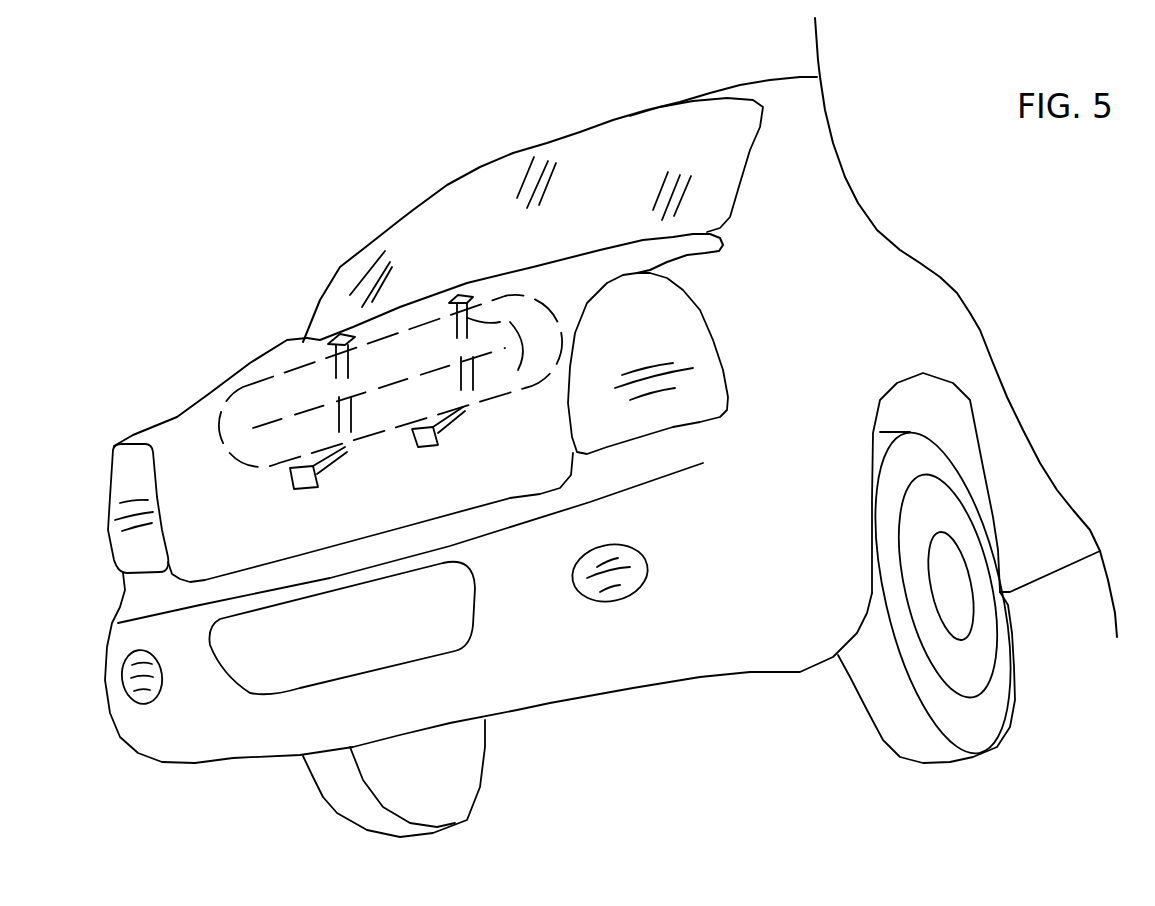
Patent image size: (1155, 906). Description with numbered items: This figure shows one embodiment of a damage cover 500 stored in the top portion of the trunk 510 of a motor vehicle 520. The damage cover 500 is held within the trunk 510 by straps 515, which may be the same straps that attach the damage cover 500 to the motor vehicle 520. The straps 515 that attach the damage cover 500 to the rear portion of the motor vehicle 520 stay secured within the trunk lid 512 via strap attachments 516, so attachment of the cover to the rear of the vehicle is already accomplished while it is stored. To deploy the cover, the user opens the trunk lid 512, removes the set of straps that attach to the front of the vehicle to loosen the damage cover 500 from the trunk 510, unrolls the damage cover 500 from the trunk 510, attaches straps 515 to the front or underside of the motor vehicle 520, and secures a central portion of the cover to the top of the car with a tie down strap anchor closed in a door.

The damage cover 500 is at (390, 353).
The trunk 510 is at (395, 506).
The trunk lid 512 is at (418, 340).
The straps 515 is at (575, 590).
The strap attachments 516 is at (253, 654).
The motor vehicle 520 is at (835, 354).